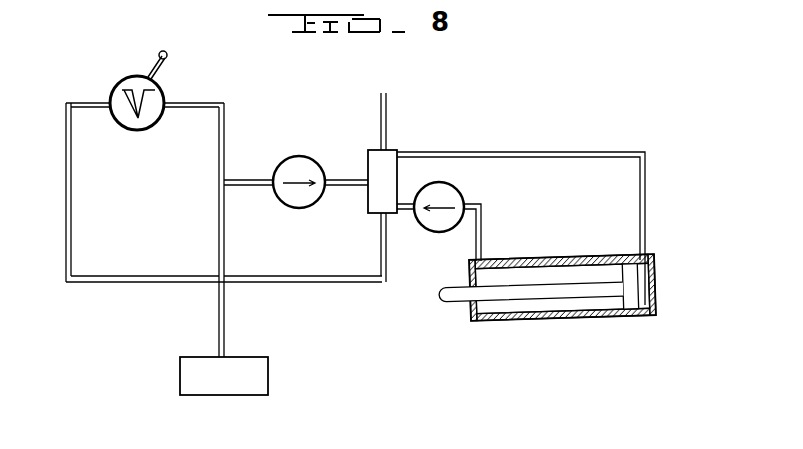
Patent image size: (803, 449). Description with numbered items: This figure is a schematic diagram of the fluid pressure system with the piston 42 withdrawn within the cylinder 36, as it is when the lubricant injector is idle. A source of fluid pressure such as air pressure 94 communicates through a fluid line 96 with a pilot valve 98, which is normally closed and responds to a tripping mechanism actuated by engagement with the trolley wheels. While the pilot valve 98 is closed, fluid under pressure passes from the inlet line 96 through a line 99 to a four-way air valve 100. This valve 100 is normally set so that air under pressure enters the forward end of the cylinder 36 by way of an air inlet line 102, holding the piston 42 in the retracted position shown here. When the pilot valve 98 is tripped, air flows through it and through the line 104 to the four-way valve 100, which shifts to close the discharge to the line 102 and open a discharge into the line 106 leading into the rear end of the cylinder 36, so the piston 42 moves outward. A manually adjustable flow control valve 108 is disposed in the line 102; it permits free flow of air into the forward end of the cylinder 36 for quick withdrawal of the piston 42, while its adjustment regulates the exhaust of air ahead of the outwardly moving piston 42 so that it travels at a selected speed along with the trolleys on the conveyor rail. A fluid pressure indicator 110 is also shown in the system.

The cylinder 36 is at (605, 318).
The piston 42 is at (465, 292).
The source of fluid pressure 94 is at (237, 395).
The fluid line 96 is at (219, 250).
The pilot valve 98 is at (139, 130).
The line 99 is at (236, 186).
The four-way air valve 100 is at (380, 198).
The air inlet line 102 is at (484, 250).
The line 104 is at (66, 212).
The line 106 is at (645, 218).
The manually adjustable flow control valve 108 is at (463, 197).
The fluid pressure indicator 110 is at (316, 162).